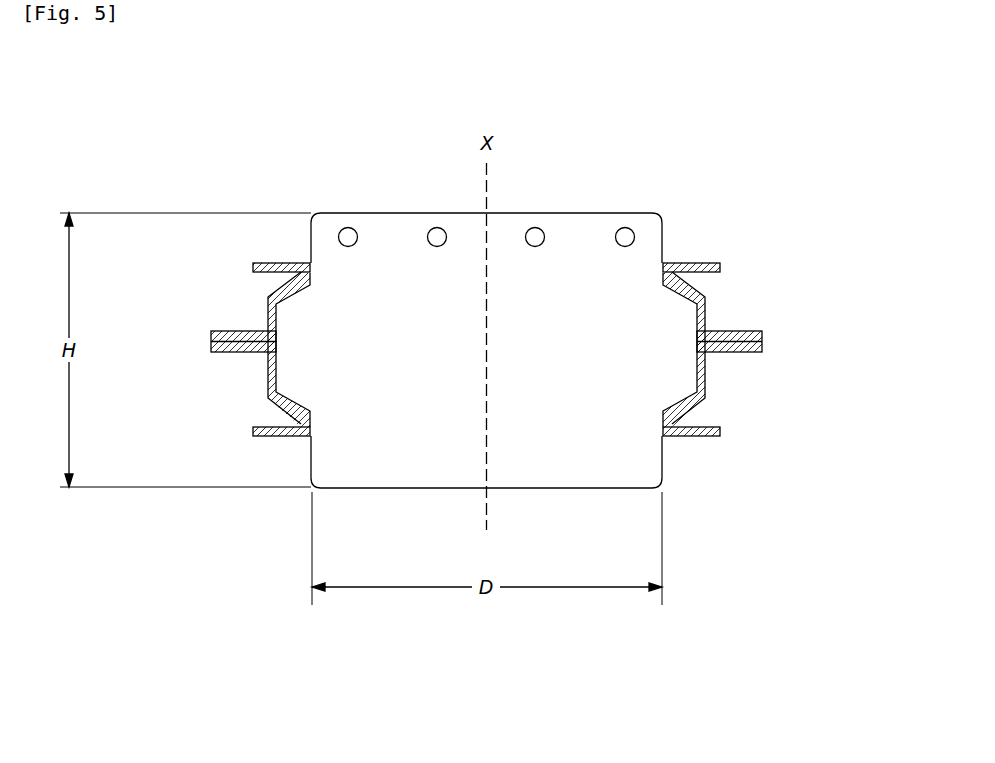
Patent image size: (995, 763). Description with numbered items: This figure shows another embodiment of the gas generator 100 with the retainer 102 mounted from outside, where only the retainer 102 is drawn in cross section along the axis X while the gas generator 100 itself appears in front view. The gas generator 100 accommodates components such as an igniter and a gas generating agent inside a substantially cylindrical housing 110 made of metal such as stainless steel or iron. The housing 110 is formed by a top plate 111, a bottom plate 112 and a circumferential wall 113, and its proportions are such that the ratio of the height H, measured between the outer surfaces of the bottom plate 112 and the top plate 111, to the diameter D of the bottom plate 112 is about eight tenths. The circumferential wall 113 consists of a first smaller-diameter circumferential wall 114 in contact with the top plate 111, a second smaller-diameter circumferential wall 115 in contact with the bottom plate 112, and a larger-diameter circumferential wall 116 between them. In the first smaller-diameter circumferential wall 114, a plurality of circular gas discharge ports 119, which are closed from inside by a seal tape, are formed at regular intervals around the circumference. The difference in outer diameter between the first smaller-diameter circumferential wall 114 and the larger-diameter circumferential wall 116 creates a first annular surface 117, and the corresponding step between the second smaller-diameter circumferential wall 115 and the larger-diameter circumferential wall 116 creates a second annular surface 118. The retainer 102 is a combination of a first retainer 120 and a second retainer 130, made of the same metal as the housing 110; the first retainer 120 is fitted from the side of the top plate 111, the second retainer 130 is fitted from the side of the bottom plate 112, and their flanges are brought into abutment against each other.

The gas generator 100 is at (581, 200).
The retainer 102 is at (144, 300).
The housing 110 is at (533, 475).
The top plate 111 is at (411, 211).
The bottom plate 112 is at (415, 490).
The circumferential wall 113 is at (811, 200).
The first smaller-diameter circumferential wall 114 is at (667, 242).
The second smaller-diameter circumferential wall 115 is at (663, 457).
The larger-diameter circumferential wall 116 is at (707, 337).
The first annular surface 117 is at (682, 290).
The second annular surface 118 is at (684, 407).
The gas discharge ports 119 is at (429, 247).
The first retainer 120 is at (258, 307).
The second retainer 130 is at (258, 372).